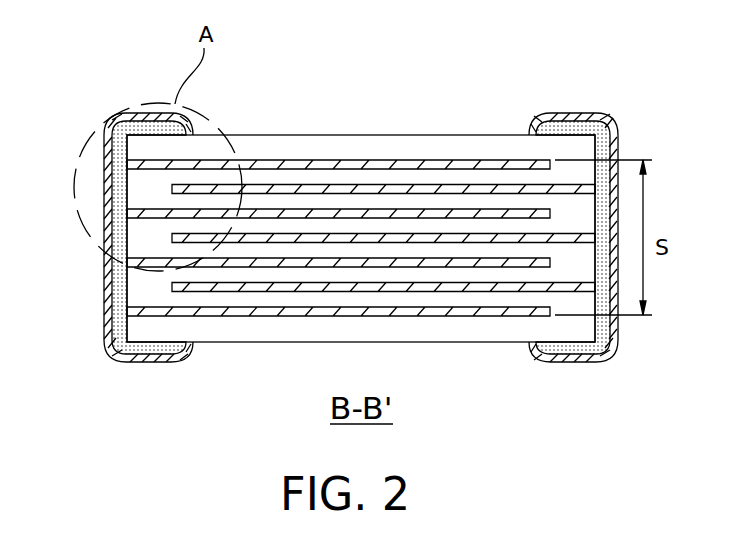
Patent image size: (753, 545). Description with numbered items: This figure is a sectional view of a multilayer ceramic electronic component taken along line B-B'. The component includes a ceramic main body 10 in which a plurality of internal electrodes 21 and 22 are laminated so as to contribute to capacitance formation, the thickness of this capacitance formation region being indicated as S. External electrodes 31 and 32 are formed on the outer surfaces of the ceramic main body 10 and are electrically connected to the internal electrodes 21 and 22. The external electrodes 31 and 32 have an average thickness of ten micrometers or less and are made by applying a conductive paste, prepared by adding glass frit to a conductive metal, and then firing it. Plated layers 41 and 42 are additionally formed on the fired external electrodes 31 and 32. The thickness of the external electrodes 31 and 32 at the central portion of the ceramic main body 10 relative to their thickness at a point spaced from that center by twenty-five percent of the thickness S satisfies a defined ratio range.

The ceramic main body 10 is at (363, 134).
The internal electrode 21 is at (507, 186).
The internal electrode 22 is at (442, 162).
The external electrode 31 is at (103, 293).
The external electrode 32 is at (616, 335).
The plated layer 41 is at (130, 363).
The plated layer 42 is at (585, 363).